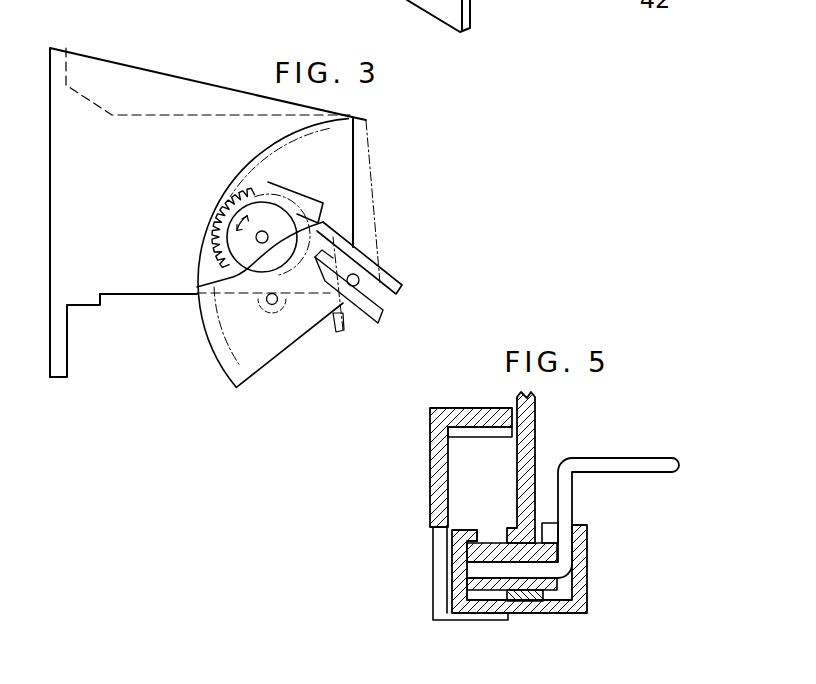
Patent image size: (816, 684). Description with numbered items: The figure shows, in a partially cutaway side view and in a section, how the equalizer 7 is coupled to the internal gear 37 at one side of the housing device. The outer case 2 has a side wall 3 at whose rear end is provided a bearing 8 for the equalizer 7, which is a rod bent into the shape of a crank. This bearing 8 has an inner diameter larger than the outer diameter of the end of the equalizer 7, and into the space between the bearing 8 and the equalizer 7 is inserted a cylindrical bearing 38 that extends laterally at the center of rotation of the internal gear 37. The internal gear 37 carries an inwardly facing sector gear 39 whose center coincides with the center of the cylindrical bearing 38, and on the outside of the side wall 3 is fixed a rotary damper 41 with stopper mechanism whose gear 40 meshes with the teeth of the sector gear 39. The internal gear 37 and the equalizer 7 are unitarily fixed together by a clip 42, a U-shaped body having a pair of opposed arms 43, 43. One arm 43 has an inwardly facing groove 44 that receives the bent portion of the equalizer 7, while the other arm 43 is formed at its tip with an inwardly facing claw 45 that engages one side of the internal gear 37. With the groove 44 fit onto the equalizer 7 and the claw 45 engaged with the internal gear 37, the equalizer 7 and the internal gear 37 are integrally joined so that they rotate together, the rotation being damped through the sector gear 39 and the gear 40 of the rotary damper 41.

In FIG. 3, the outer case 2 is at (62, 350).
In FIG. 3, the side wall 3 is at (124, 82).
In FIG. 5, the side wall 3 is at (538, 411).
In FIG. 5, the equalizer 7 is at (646, 466).
In FIG. 5, the bearing 8 is at (524, 600).
In FIG. 3, the internal gear 37 is at (243, 350).
In FIG. 5, the internal gear 37 is at (430, 480).
In FIG. 5, the cylindrical bearing 38 is at (480, 584).
In FIG. 3, the sector gear 39 is at (205, 253).
In FIG. 5, the sector gear 39 is at (478, 441).
In FIG. 3, the gear 40 is at (250, 212).
In FIG. 3, the rotary damper 41 is at (302, 202).
In FIG. 3, the clip 42 is at (378, 298).
In FIG. 5, the clip 42 is at (598, 586).
In FIG. 5, the arm 43 is at (476, 555).
In FIG. 5, the groove 44 is at (551, 533).
In FIG. 5, the claw 45 is at (465, 525).